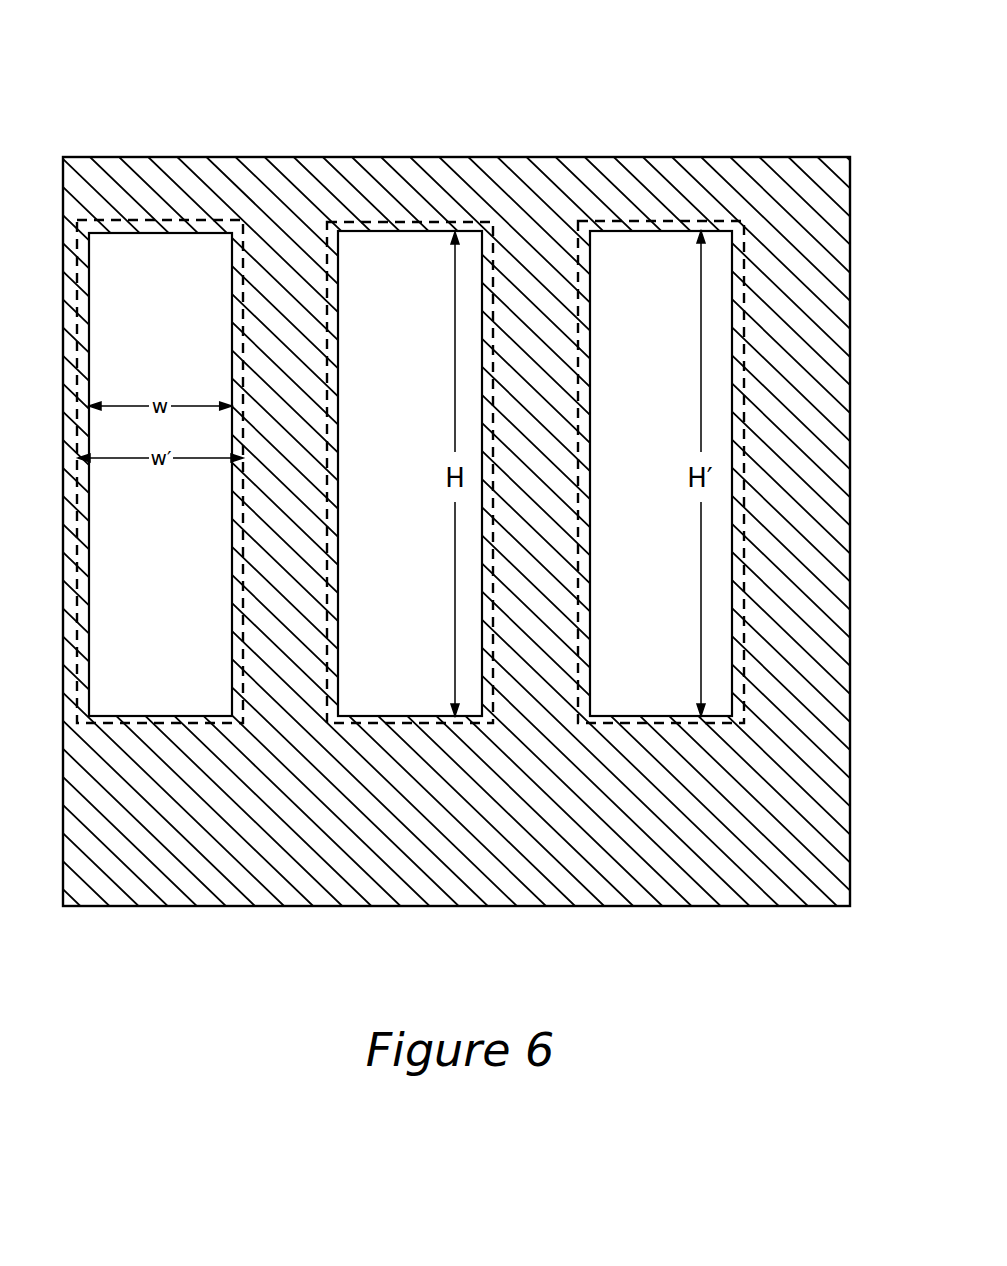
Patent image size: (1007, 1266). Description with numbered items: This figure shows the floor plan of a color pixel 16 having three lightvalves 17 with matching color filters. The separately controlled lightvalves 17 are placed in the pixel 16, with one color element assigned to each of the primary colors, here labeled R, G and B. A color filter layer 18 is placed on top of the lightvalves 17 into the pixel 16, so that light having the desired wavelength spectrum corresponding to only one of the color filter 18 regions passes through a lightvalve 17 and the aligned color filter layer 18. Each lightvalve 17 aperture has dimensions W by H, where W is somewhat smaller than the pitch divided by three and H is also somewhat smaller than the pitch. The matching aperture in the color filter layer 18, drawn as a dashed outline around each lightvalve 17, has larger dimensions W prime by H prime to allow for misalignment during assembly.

The pixel 16 is at (778, 157).
The lightvalves 17 is at (135, 273).
The color filter layer 18 is at (676, 218).